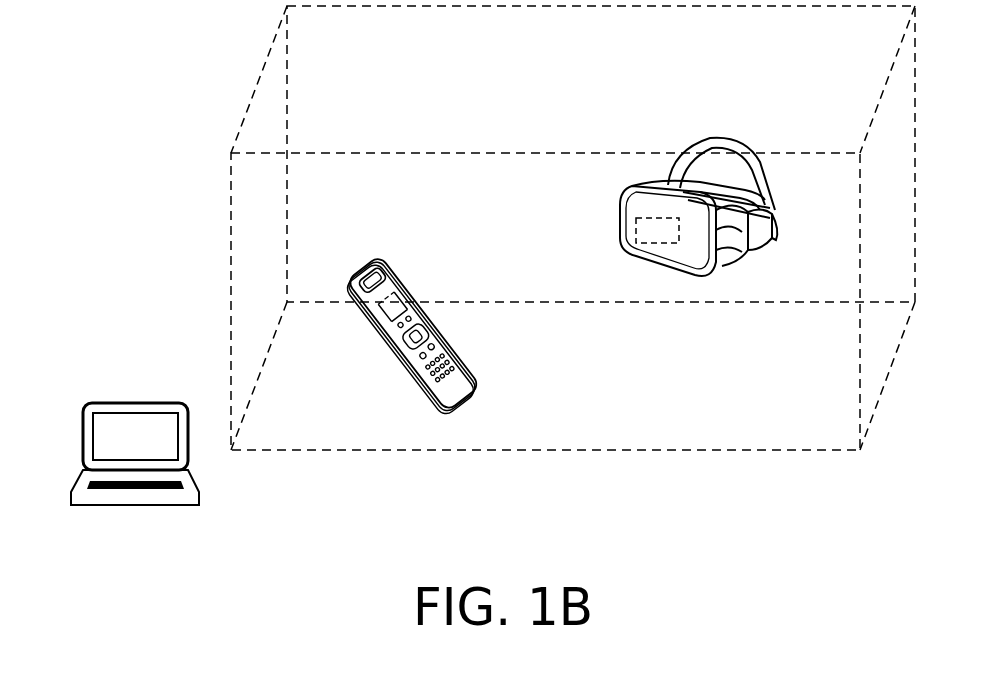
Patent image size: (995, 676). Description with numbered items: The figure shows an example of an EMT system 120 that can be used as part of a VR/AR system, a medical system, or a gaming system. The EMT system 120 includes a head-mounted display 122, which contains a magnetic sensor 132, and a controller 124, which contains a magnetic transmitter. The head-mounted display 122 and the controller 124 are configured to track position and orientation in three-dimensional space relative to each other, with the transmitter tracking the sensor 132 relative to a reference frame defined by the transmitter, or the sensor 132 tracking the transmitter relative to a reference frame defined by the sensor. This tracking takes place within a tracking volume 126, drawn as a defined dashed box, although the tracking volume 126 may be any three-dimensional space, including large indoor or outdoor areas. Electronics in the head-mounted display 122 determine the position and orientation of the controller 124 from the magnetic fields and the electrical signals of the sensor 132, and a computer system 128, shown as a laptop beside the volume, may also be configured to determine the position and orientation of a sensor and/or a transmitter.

The EMT system 120 is at (126, 130).
The head-mounted display 122 is at (719, 207).
The controller 124 is at (359, 307).
The tracking volume 126 is at (250, 100).
The computer system 128 is at (80, 448).
The magnetic sensor 132 is at (636, 222).